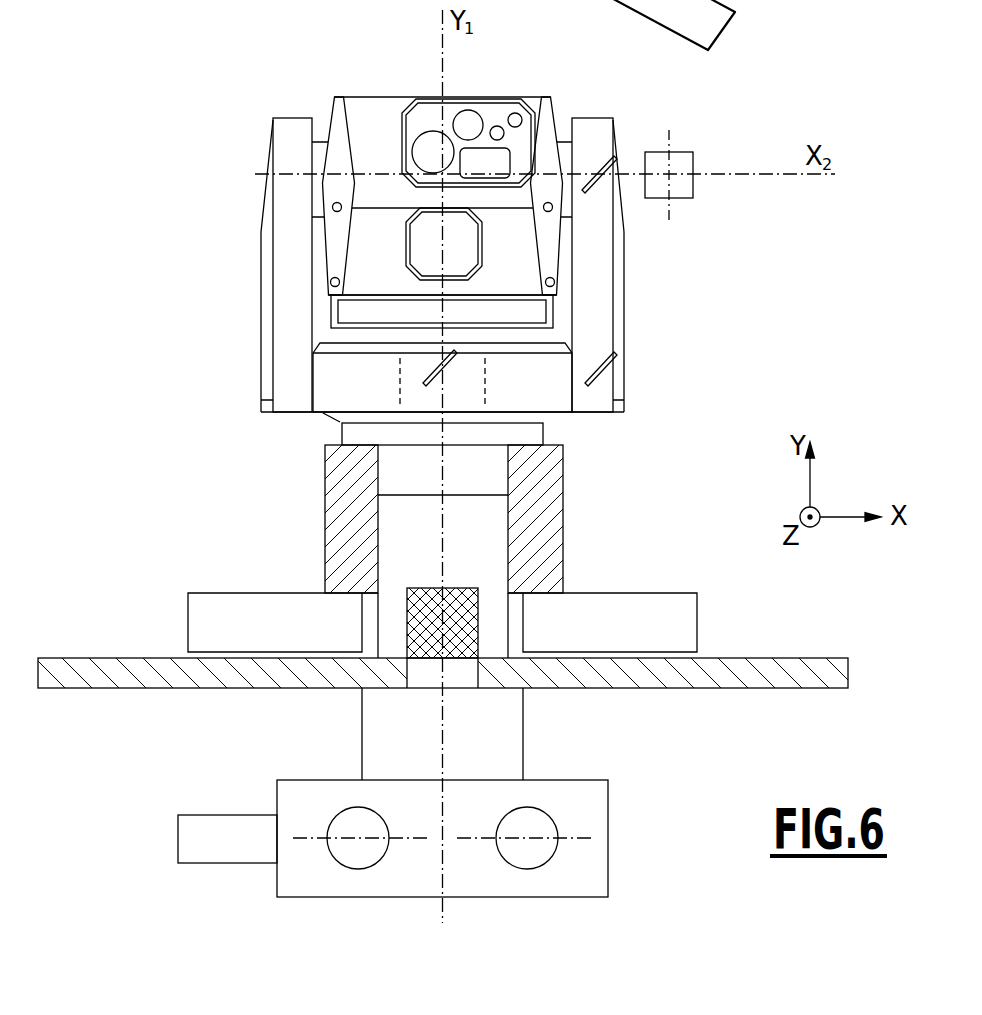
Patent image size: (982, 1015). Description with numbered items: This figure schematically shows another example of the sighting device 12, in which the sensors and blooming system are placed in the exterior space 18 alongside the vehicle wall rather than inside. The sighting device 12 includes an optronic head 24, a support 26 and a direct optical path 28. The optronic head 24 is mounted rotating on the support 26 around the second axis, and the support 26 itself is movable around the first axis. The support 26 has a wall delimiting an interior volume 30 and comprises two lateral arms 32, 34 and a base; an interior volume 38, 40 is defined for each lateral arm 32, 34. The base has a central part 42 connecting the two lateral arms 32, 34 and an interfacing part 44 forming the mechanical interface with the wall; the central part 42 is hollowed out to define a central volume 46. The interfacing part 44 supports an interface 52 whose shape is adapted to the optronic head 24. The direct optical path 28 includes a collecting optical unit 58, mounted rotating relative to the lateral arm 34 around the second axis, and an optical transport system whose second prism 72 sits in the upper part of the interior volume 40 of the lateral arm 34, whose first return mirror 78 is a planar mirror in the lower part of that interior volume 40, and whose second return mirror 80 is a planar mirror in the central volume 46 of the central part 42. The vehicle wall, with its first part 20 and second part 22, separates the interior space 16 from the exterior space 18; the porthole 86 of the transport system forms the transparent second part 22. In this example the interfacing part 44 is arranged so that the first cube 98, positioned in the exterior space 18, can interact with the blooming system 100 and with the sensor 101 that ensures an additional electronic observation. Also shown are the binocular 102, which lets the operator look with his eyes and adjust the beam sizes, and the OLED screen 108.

The sighting device 12 is at (271, 79).
The optronic head 24 is at (373, 108).
The lateral arm 32 is at (288, 128).
The lateral arm 34 is at (597, 130).
The second prism 72 is at (605, 170).
The direct optical path 28 is at (705, 117).
The collecting optical unit 58 is at (682, 183).
The interior volume 38 is at (292, 236).
The interior volume 40 is at (593, 266).
The support 26 is at (226, 292).
The interior volume 30 is at (296, 362).
The central volume 46 is at (522, 367).
The first return mirror 78 is at (586, 381).
The second return mirror 80 is at (428, 380).
The central part 42 is at (535, 390).
The interfacing part 44 is at (258, 465).
The exterior space 18 is at (54, 530).
The interface 52 is at (428, 432).
The first cube 98 is at (450, 605).
The second unit 101 is at (240, 612).
The first unit 100 is at (639, 612).
The interior space 16 is at (54, 765).
The first part of the wall 20 is at (148, 682).
The second part of the wall 22 is at (426, 678).
The porthole 86 is at (462, 688).
The screen 108 is at (228, 835).
The binocular 102 is at (410, 873).